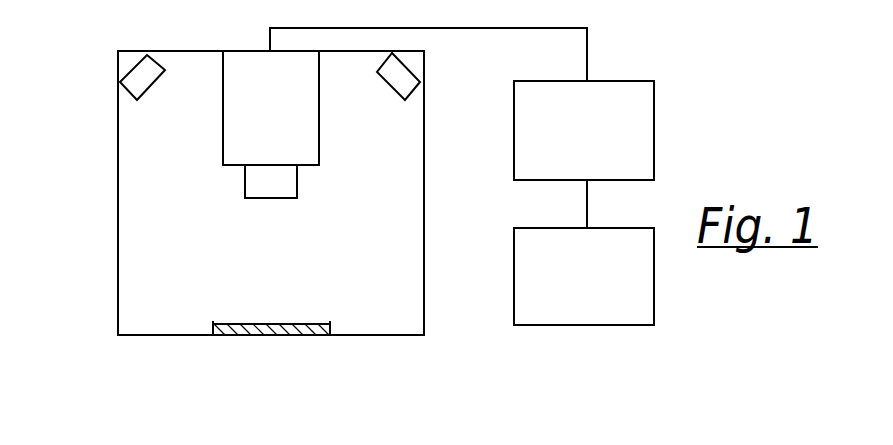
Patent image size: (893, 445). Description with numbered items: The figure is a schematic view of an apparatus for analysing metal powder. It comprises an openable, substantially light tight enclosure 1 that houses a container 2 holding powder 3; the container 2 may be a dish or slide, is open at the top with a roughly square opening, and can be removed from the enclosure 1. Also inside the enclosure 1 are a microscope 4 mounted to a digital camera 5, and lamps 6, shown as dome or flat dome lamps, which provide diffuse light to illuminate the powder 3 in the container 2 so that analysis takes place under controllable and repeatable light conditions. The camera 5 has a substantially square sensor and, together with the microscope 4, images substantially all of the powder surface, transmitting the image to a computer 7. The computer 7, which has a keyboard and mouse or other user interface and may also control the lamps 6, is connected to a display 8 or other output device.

The enclosure 1 is at (118, 197).
The container 2 is at (213, 326).
The powder 3 is at (268, 335).
The microscope 4 is at (253, 182).
The digital camera 5 is at (251, 72).
The lamps 6 is at (137, 85).
The computer 7 is at (462, 104).
The display 8 is at (584, 252).